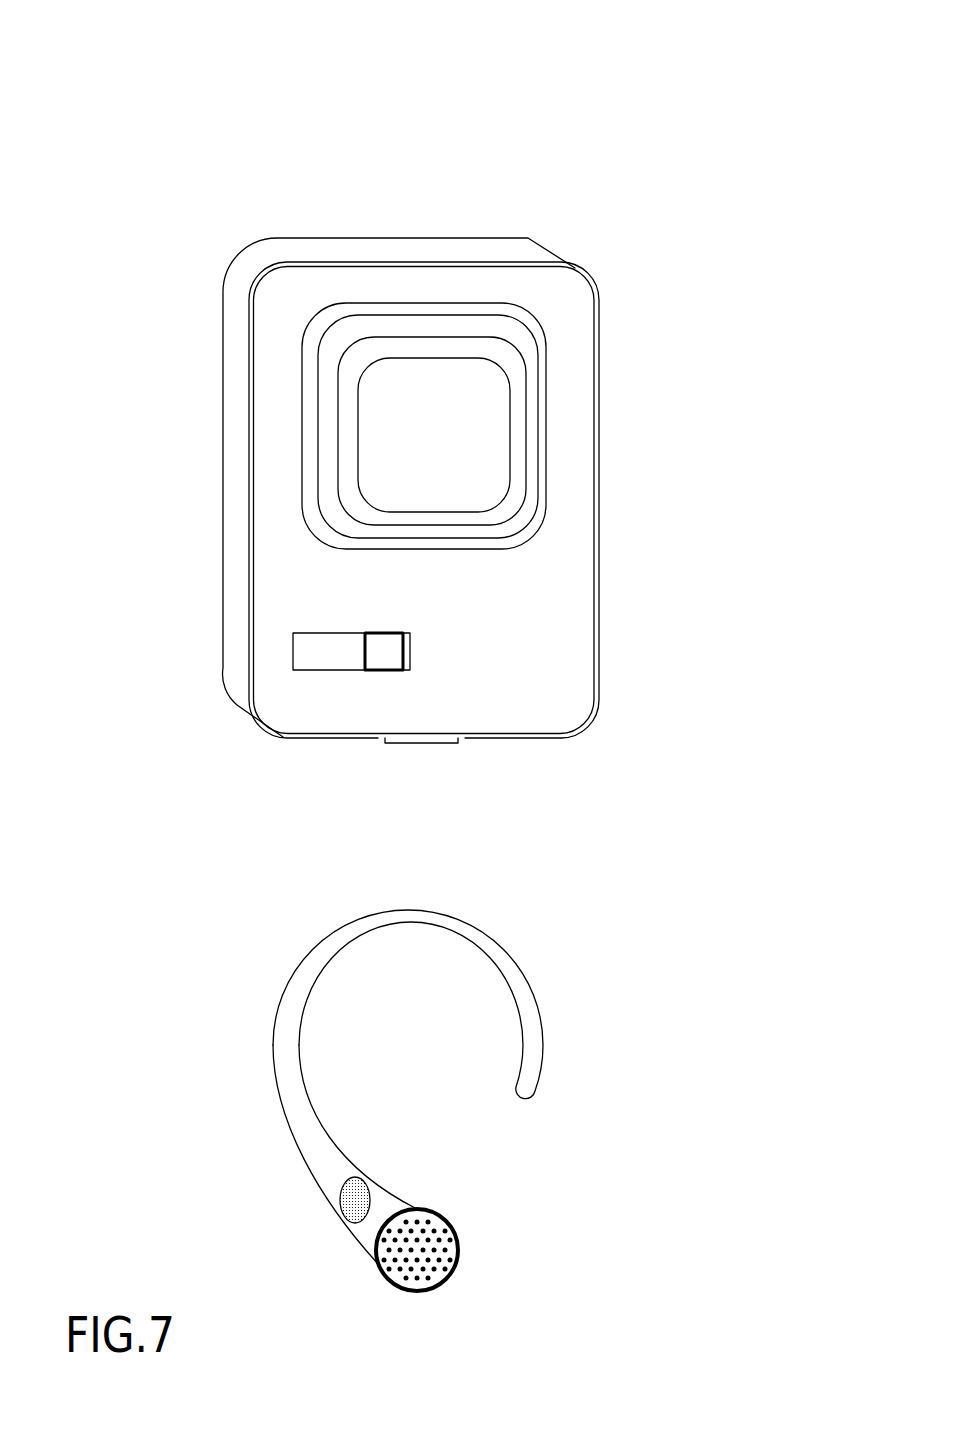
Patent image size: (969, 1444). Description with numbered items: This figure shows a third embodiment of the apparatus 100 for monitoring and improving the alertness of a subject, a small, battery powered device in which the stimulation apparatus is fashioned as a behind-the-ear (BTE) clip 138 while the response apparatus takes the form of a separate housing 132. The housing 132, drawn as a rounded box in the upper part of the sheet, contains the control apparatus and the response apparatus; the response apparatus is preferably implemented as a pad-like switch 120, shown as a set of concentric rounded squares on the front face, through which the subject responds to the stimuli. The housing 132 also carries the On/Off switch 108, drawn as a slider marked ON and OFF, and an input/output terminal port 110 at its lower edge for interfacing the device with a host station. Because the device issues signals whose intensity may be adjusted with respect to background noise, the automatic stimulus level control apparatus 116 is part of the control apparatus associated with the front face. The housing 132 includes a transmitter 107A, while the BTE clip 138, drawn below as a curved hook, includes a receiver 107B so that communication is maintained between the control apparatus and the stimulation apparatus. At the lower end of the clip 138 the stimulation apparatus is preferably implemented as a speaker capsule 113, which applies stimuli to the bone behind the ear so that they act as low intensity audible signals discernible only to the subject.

The apparatus for monitoring and improving the alertness of a subject 100 is at (527, 90).
The transmitter 107A is at (472, 252).
The receiver 107B is at (360, 1175).
The On/Off switch 108 is at (355, 657).
The input/output terminal port 110 is at (410, 743).
The capsule speaker 113 is at (440, 1215).
The automatic stimulus level control apparatus 116 is at (580, 480).
The pad-like switch 120 is at (348, 317).
The housing 132 is at (535, 280).
The behind-the-ear clip 138 is at (405, 910).